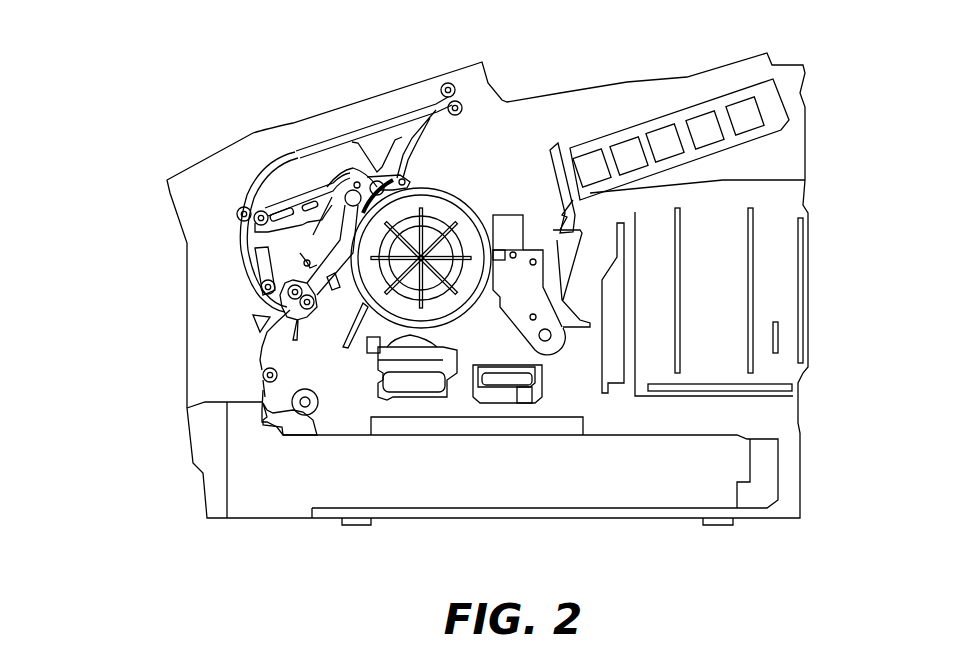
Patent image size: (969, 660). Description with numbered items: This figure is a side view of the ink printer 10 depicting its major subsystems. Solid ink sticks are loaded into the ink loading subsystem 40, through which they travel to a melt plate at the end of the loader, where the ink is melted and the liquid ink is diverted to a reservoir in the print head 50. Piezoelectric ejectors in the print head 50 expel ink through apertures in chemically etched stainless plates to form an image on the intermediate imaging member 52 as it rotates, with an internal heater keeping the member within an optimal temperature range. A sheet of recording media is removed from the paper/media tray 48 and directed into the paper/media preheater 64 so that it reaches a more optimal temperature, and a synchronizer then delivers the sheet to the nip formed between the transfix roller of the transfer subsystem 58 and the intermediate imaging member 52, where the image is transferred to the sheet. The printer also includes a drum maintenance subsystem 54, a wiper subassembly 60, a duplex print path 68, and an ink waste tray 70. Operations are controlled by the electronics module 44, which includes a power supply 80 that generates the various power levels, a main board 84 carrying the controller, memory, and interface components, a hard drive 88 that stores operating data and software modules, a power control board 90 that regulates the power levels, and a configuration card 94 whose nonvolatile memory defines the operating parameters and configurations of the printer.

The ink printer 10 is at (132, 316).
The ink loading subsystem 40 is at (700, 107).
The electronics module 44 is at (774, 172).
The paper/media tray 48 is at (723, 490).
The print head 50 is at (508, 215).
The intermediate imaging member 52 is at (438, 210).
The drum maintenance subsystem 54 is at (408, 400).
The transfer subsystem 58 is at (352, 195).
The wiper subassembly 60 is at (347, 347).
The paper/media preheater 64 is at (293, 308).
The duplex print path 68 is at (257, 187).
The ink waste tray 70 is at (518, 398).
The power supply 80 is at (680, 218).
The main board 84 is at (753, 258).
The hard drive 88 is at (803, 310).
The power control board 90 is at (737, 393).
The configuration card 94 is at (778, 338).